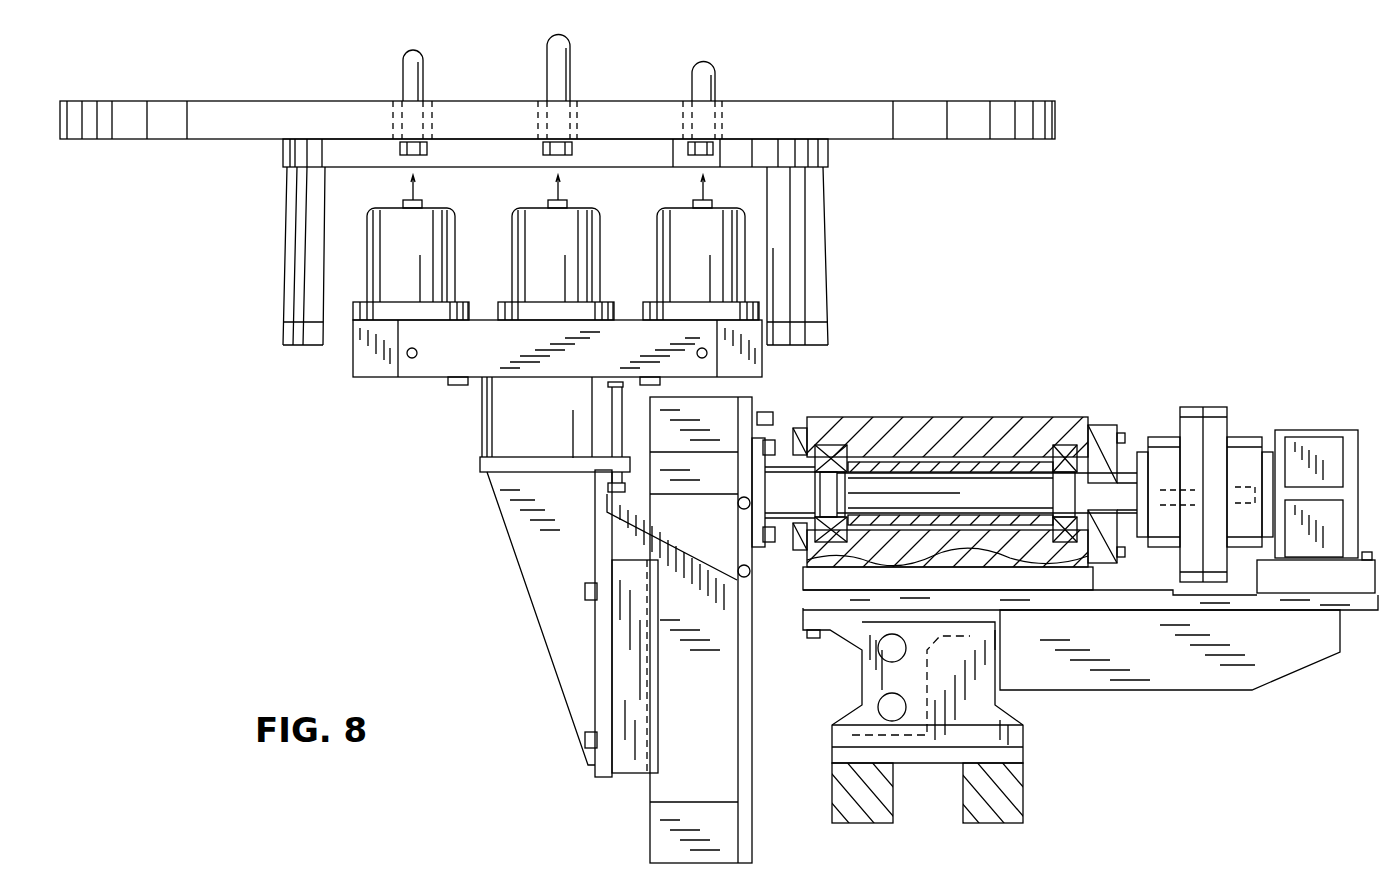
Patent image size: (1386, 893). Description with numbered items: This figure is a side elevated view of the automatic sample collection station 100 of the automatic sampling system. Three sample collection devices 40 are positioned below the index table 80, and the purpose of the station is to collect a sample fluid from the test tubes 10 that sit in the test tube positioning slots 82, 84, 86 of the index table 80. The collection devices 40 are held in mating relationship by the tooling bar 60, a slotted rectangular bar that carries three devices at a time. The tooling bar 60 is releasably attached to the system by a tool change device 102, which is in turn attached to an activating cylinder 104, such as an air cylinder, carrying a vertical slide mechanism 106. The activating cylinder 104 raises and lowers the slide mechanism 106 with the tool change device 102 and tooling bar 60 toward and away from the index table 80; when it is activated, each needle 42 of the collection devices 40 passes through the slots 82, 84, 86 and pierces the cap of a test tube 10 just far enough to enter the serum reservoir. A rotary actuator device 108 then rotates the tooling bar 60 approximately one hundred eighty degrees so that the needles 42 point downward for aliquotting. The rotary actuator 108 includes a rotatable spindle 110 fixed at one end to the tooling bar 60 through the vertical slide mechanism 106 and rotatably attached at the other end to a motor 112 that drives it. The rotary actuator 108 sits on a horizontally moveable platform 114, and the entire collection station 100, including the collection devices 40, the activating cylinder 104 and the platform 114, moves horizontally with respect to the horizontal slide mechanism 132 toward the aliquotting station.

The test tube 10 is at (565, 76).
The sample collection device 40 is at (373, 213).
The needle 42 is at (417, 183).
The tooling bar 60 is at (353, 357).
The index table 80 is at (128, 106).
The test tube positioning slot 82 is at (398, 100).
The test tube positioning slot 84 is at (545, 100).
The test tube positioning slot 86 is at (693, 96).
The automatic sample collection station 100 is at (452, 506).
The tool change device 102 is at (510, 436).
The activating cylinder 104 is at (685, 678).
The vertical slide mechanism 106 is at (625, 790).
The rotary actuator device 108 is at (1134, 400).
The rotatable spindle 110 is at (978, 492).
The motor 112 is at (1307, 435).
The horizontally moveable platform 114 is at (1196, 678).
The horizontal slide mechanism 132 is at (1012, 735).